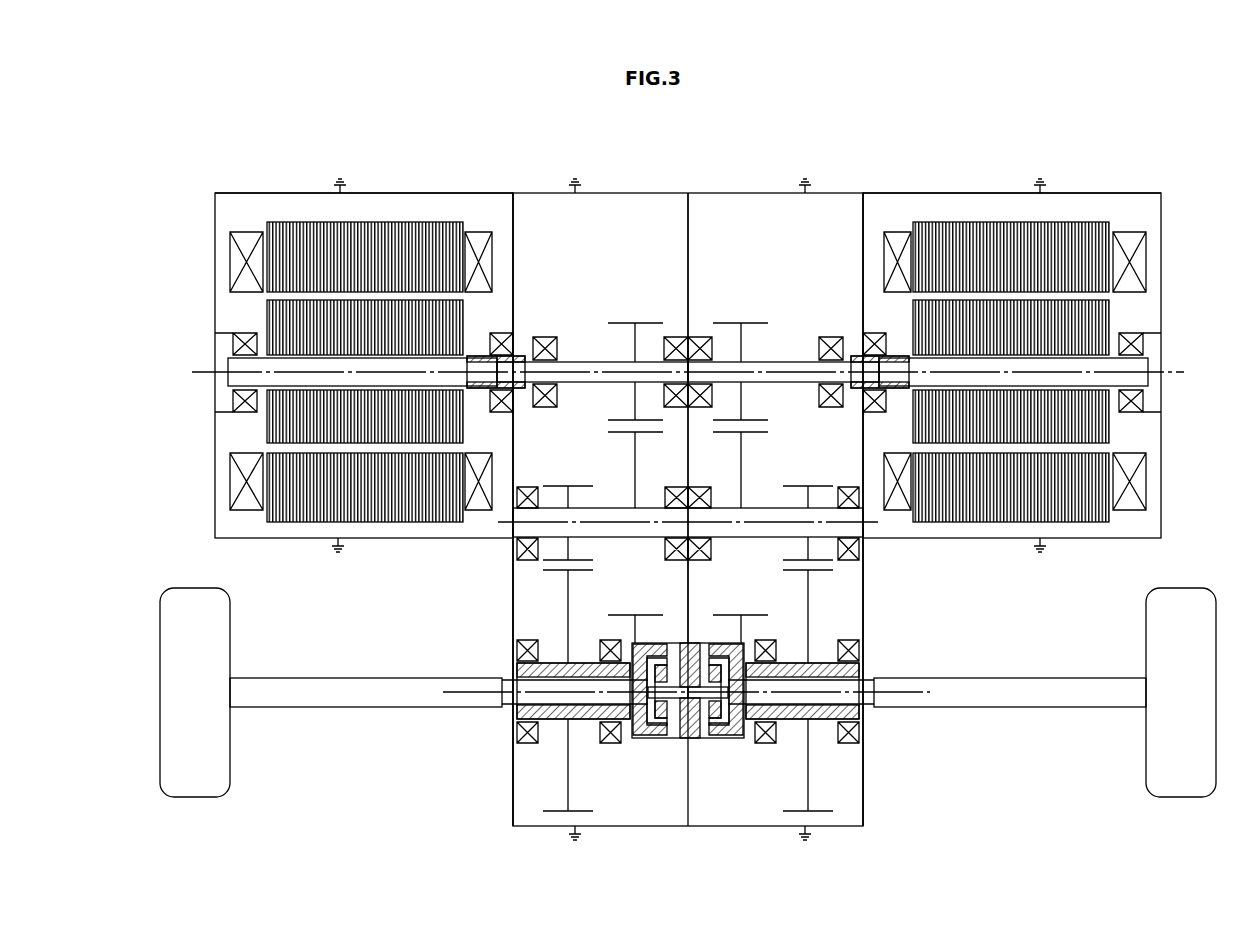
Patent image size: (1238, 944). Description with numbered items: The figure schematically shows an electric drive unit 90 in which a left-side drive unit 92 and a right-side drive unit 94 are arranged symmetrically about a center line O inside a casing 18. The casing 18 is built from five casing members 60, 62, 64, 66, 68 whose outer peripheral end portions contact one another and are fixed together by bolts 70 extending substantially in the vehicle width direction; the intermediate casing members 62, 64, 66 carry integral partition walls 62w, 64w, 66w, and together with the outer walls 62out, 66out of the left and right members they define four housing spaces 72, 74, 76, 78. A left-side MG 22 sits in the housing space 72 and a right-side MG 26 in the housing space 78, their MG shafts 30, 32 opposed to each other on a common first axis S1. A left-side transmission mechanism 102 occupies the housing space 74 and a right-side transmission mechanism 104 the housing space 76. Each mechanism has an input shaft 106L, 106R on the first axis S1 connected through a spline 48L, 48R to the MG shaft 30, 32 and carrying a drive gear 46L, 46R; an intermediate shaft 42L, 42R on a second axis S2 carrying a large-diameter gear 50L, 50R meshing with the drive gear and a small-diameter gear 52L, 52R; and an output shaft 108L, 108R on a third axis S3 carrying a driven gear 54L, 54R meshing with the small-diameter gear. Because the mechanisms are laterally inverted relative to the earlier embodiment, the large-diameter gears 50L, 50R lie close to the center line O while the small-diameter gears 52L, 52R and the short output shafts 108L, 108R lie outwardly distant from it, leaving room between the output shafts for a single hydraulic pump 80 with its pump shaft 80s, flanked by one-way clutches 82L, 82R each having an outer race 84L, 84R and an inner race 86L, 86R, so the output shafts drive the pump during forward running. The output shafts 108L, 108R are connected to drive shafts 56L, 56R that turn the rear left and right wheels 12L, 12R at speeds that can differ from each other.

The rear left wheel 12L is at (195, 785).
The rear right wheel 12R is at (1181, 785).
The casing 18 is at (237, 188).
The left-side MG 22 is at (395, 213).
The right-side MG 26 is at (980, 213).
The MG shaft 30 is at (262, 392).
The MG shaft 32 is at (1114, 392).
The intermediate shaft 42L is at (607, 510).
The intermediate shaft 42R is at (764, 510).
The drive gear 46L is at (627, 320).
The drive gear 46R is at (753, 320).
The spline 48L is at (533, 403).
The spline 48R is at (843, 403).
The large-diameter gear 50L is at (610, 622).
The large-diameter gear 50R is at (766, 622).
The small-diameter gear 52L is at (558, 481).
The small-diameter gear 52R is at (818, 481).
The driven gear 54L is at (555, 812).
The driven gear 54R is at (789, 812).
The drive shaft 56L is at (360, 694).
The drive shaft 56R is at (1016, 694).
The casing member 60 is at (214, 262).
The casing member 62 is at (437, 193).
The partition wall 62w is at (514, 278).
The first outer wall 62out is at (512, 600).
The casing member 64 is at (698, 193).
The partition wall 64w is at (687, 269).
The casing member 66 is at (880, 193).
The partition wall 66w is at (862, 278).
The second outer wall 66out is at (864, 600).
The casing member 68 is at (1164, 262).
The bolt 70 is at (342, 188).
The housing space 72 is at (255, 222).
The housing space 74 is at (548, 222).
The housing space 76 is at (728, 222).
The housing space 78 is at (896, 222).
The hydraulic pump 80 is at (696, 700).
The pump shaft 80s is at (675, 742).
The one-way clutch 82L is at (622, 740).
The one-way clutch 82R is at (760, 740).
The outer race 84L is at (655, 646).
The outer race 84R is at (721, 646).
The inner race 86L is at (652, 740).
The inner race 86R is at (722, 746).
The electric drive unit 90 is at (1130, 172).
The left-side drive unit 92 is at (287, 160).
The right-side drive unit 94 is at (1095, 152).
The left-side transmission mechanism 102 is at (622, 250).
The right-side transmission mechanism 104 is at (773, 247).
The input shaft 106L is at (570, 360).
The input shaft 106R is at (806, 360).
The output shaft 108L is at (555, 743).
The output shaft 108R is at (821, 743).
The center line O is at (688, 193).
The first axis S1 is at (672, 372).
The second axis S2 is at (674, 523).
The third axis S3 is at (671, 691).